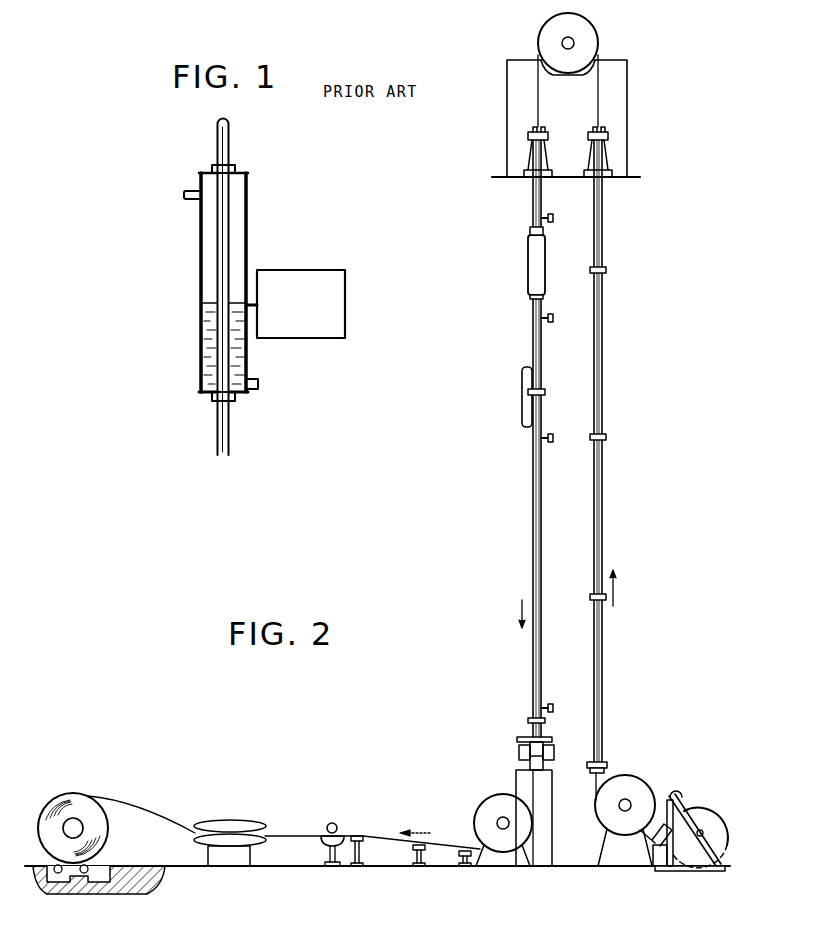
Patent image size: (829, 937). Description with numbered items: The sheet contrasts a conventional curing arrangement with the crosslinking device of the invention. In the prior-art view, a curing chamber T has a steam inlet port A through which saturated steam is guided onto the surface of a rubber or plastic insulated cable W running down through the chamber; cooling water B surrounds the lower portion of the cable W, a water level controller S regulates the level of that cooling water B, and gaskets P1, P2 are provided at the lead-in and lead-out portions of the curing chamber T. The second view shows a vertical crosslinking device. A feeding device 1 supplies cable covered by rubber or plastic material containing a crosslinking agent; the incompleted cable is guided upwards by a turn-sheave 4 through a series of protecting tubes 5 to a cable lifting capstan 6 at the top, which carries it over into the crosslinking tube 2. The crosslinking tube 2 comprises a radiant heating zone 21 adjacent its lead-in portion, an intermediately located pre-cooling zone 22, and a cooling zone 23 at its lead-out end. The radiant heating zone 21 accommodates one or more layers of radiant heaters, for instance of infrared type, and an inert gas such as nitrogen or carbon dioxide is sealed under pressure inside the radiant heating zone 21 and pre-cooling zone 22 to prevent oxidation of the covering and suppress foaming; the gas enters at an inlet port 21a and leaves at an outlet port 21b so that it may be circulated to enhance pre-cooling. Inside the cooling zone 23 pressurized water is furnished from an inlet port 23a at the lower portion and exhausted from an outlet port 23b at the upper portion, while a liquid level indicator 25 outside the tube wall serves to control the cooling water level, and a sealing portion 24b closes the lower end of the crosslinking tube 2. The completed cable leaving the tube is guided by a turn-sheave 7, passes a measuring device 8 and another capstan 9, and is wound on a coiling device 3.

In FIG. 1, the steam inlet port A is at (174, 196).
In FIG. 1, the rubber or plastic insulated cable W is at (201, 246).
In FIG. 1, the curing chamber T is at (248, 225).
In FIG. 1, the cooling water B is at (205, 345).
In FIG. 1, the water level controller S is at (285, 270).
In FIG. 1, the gasket P1 is at (236, 168).
In FIG. 1, the gasket P2 is at (235, 400).
In FIG. 2, the feeding device 1 is at (714, 822).
In FIG. 2, the crosslinking tube 2 is at (516, 514).
In FIG. 2, the coiling device 3 is at (78, 800).
In FIG. 2, the turn-sheave 4 is at (625, 782).
In FIG. 2, the protecting tubes 5 is at (603, 502).
In FIG. 2, the cable lifting capstan 6 is at (558, 31).
In FIG. 2, the turn-sheave 7 is at (483, 815).
In FIG. 2, the measuring device 8 is at (322, 841).
In FIG. 2, the capstan 9 is at (210, 842).
In FIG. 2, the radiant heating zone 21 is at (528, 228).
In FIG. 2, the inlet port 21a is at (551, 221).
In FIG. 2, the outlet port 21b is at (552, 320).
In FIG. 2, the pre-cooling zone 22 is at (528, 387).
In FIG. 2, the cooling zone 23 is at (482, 387).
In FIG. 2, the inlet port 23a is at (557, 708).
In FIG. 2, the outlet port 23b is at (553, 440).
In FIG. 2, the sealing portion 24b is at (519, 753).
In FIG. 2, the liquid level indicator 25 is at (521, 400).